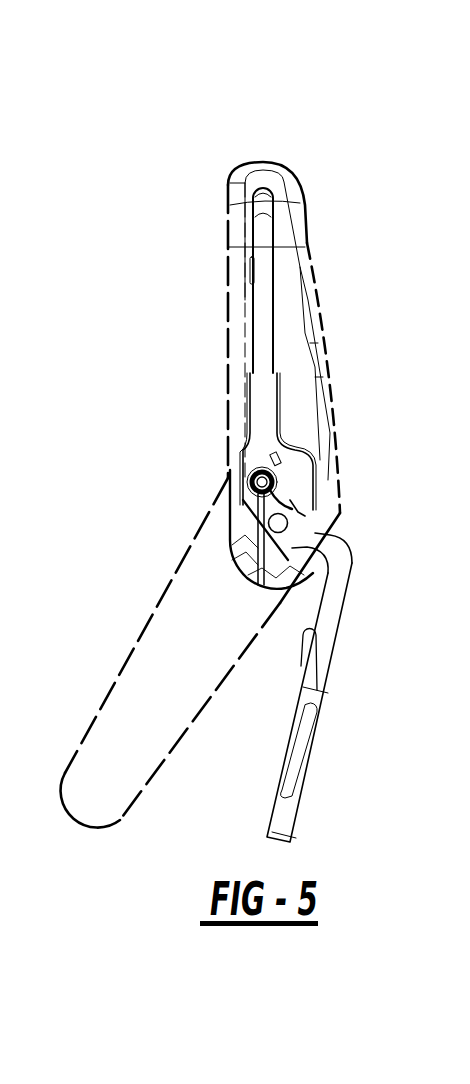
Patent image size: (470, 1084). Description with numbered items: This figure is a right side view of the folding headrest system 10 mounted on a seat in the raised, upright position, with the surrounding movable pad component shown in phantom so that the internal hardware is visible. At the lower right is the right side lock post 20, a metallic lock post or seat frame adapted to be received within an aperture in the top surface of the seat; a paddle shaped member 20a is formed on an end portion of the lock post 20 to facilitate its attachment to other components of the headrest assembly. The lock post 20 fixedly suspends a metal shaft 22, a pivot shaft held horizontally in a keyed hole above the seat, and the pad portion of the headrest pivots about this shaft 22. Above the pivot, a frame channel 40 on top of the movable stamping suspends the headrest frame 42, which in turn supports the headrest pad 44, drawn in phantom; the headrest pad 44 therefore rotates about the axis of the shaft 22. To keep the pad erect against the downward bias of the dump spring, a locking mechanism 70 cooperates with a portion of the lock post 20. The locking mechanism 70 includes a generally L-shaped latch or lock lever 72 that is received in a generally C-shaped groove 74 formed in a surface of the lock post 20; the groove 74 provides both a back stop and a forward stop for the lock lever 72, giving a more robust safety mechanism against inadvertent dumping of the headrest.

The folding headrest system 10 is at (339, 174).
The right side lock post 20 is at (325, 657).
The paddle shaped member 20a is at (308, 525).
The shaft 22 is at (275, 520).
The frame channel 40 is at (281, 409).
The headrest frame 42 is at (284, 312).
The headrest pad 44 is at (228, 307).
The locking mechanism 70 is at (373, 505).
The lock lever 72 is at (290, 508).
The groove 74 is at (297, 517).